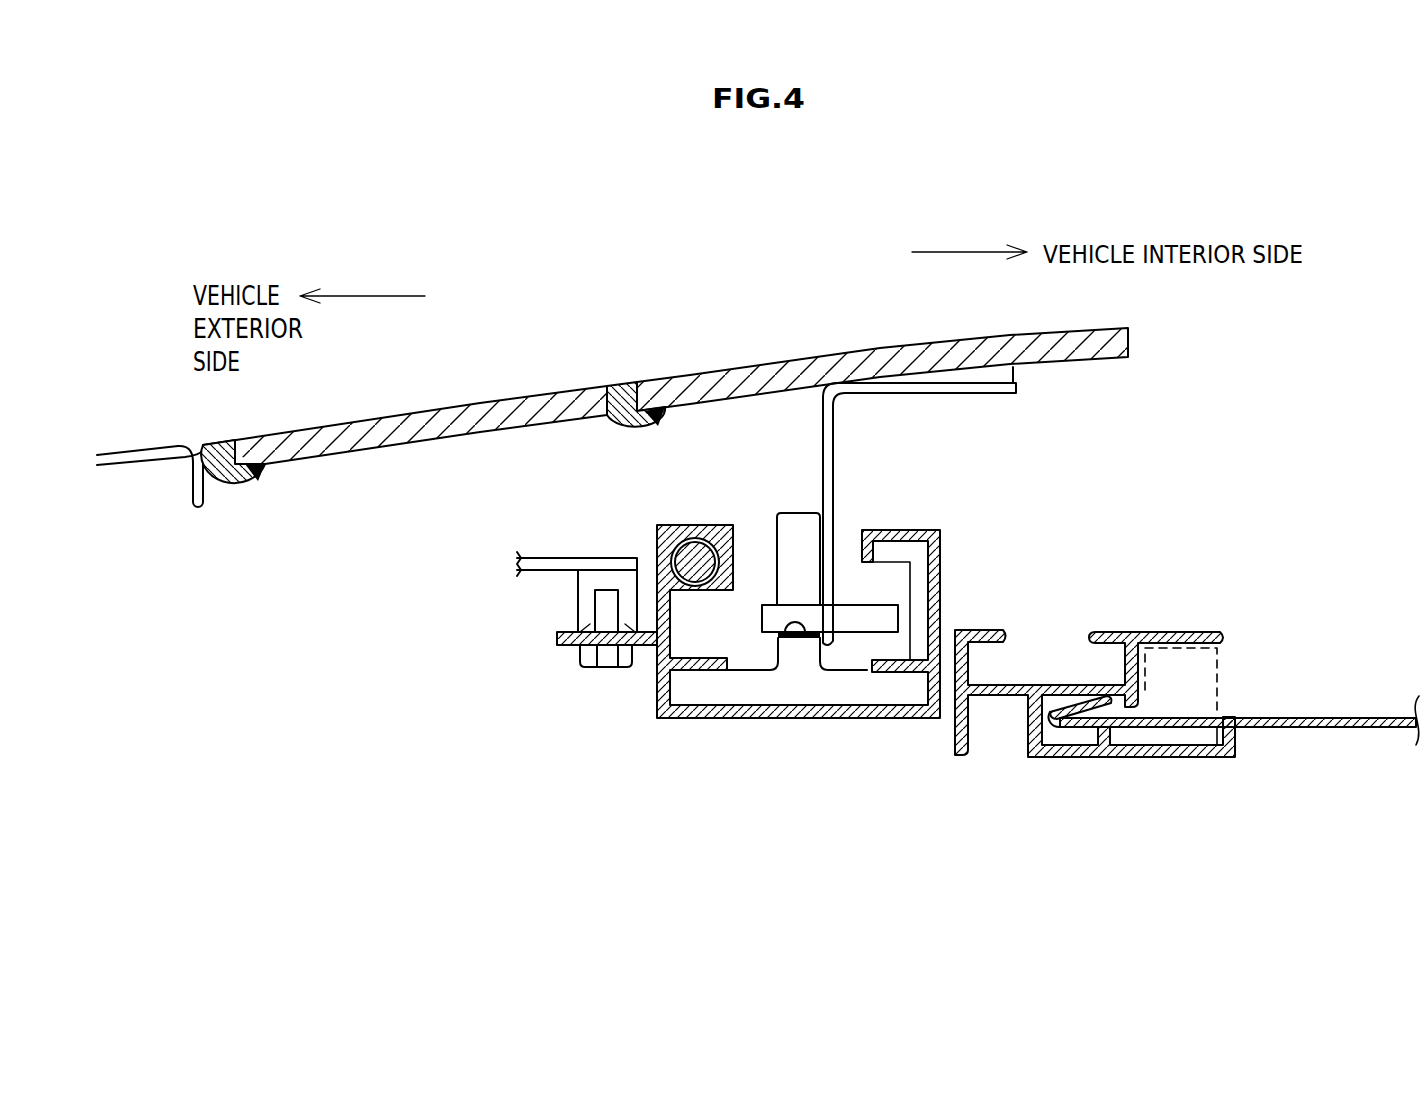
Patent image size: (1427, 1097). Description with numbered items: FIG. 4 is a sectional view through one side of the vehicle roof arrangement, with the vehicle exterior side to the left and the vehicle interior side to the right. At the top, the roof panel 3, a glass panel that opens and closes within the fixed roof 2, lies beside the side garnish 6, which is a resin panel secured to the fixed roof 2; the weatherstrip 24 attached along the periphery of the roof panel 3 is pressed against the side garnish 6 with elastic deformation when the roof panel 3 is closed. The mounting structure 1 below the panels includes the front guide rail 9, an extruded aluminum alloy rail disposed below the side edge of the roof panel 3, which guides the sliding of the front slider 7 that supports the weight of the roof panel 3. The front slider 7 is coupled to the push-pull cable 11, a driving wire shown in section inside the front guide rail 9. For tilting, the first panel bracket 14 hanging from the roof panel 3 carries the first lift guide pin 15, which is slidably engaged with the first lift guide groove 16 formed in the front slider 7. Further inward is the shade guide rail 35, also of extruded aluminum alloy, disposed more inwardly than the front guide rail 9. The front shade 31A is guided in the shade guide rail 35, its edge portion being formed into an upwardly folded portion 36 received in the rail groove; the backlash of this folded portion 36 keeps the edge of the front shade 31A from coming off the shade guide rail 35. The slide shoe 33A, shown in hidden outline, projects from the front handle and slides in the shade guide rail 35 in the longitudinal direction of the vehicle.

The mounting structure (bolt assembly) 1 is at (521, 718).
The fixed roof 2 is at (141, 446).
The roof panel 3 is at (900, 357).
The side garnish 6 is at (453, 408).
The front slider 7 is at (798, 511).
The front guide rail 9 is at (936, 577).
The push-pull cable 11 is at (695, 543).
The first panel bracket 14 is at (835, 413).
The first lift guide pin 15 is at (770, 617).
The first lift guide groove 16 is at (808, 636).
The weatherstrip 24 is at (628, 386).
The front shade 31A is at (1318, 728).
The slide shoe 33A is at (1217, 688).
The shade guide rail 35 is at (1145, 690).
The upwardly folded portion 36 is at (1068, 692).